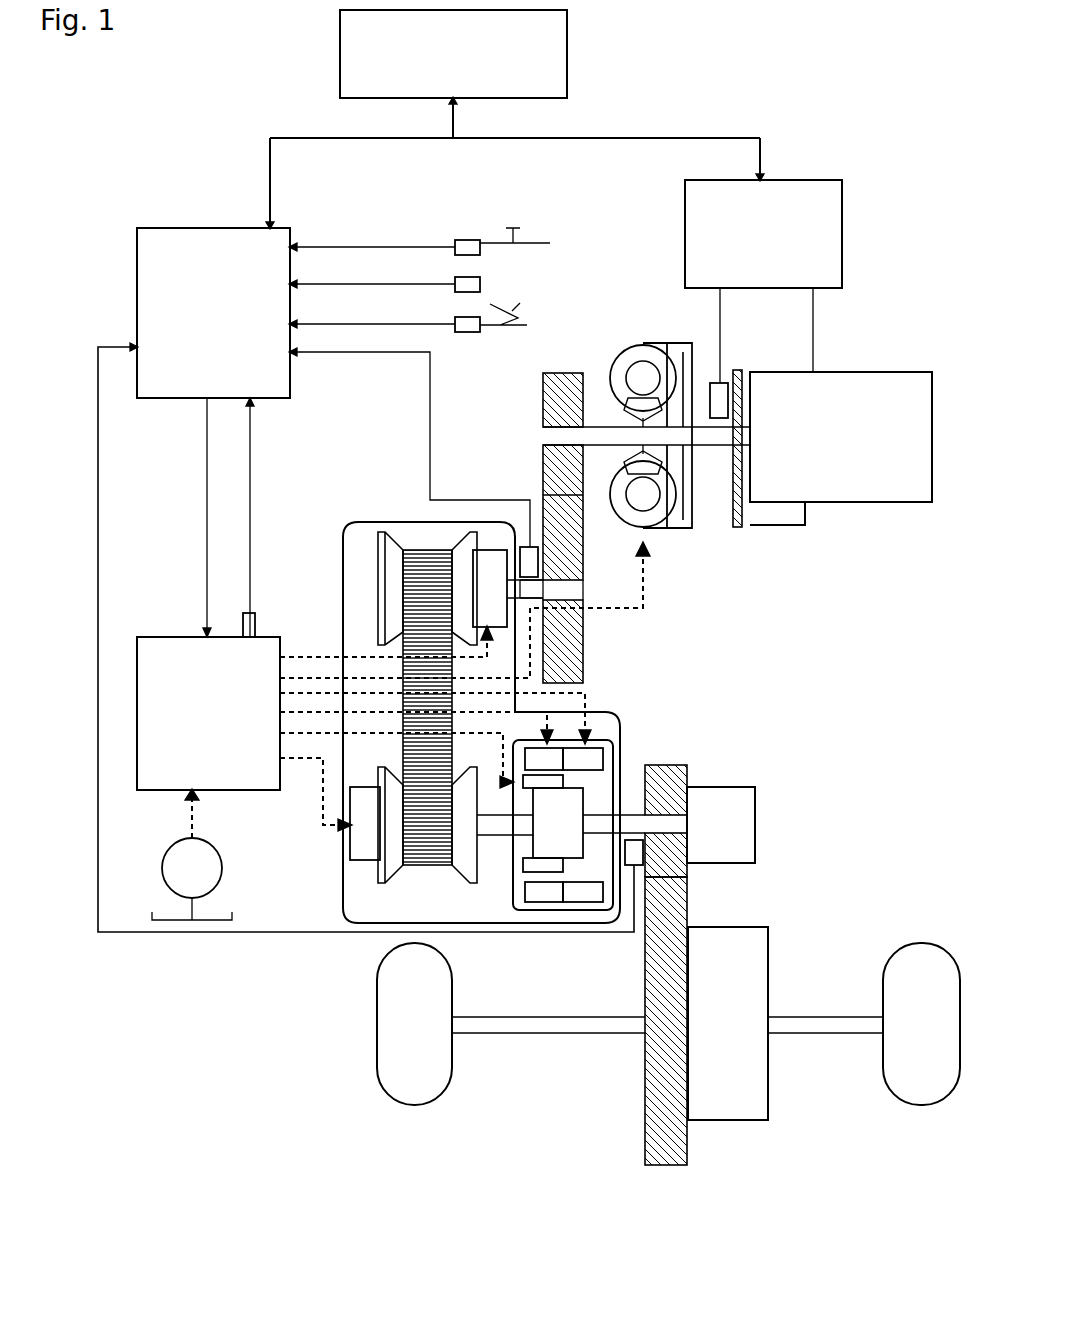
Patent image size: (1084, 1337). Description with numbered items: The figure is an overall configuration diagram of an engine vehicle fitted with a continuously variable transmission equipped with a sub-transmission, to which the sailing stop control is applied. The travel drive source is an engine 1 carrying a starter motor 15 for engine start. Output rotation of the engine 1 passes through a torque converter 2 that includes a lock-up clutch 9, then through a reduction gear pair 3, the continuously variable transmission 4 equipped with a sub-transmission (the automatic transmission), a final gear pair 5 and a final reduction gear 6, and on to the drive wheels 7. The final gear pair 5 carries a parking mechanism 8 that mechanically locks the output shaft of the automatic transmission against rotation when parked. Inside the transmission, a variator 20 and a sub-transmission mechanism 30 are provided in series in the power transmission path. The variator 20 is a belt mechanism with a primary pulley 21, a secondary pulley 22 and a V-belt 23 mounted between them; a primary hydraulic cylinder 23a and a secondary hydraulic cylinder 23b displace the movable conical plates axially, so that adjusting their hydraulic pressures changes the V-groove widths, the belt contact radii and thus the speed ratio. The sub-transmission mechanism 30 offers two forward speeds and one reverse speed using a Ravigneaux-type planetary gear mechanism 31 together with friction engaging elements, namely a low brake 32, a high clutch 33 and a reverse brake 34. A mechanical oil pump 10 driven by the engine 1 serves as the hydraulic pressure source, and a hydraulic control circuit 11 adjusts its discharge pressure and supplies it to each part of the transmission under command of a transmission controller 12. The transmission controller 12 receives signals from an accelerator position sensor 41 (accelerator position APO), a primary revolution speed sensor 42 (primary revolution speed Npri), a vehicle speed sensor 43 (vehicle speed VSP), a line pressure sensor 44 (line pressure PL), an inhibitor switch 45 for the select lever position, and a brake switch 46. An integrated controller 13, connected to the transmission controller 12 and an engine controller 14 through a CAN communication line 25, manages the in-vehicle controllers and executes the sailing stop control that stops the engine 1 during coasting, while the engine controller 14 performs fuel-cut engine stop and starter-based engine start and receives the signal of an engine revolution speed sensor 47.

The engine 1 is at (915, 398).
The torque converter 2 is at (665, 430).
The reduction gear pair 3 is at (566, 373).
The continuously variable transmission 4 is at (380, 536).
The final gear pair 5 is at (666, 1166).
The final reduction gear 6 is at (740, 1120).
The drive wheels 7 is at (414, 1100).
The parking mechanism 8 is at (745, 797).
The lock-up clutch 9 is at (692, 478).
The mechanical oil pump 10 is at (222, 840).
The hydraulic control circuit 11 is at (160, 650).
The transmission controller 12 is at (218, 250).
The integrated controller 13 is at (567, 30).
The engine controller 14 is at (820, 182).
The starter motor 15 is at (770, 527).
The variator 20 is at (343, 540).
The primary pulley 21 is at (385, 582).
The secondary pulley 22 is at (380, 875).
The V-belt 23 is at (422, 550).
The primary hydraulic cylinder 23a is at (488, 550).
The secondary hydraulic cylinder 23b is at (352, 845).
The CAN communication line 25 is at (580, 138).
The sub-transmission mechanism 30 is at (578, 798).
The Ravigneaux-type planetary gear mechanism 31 is at (687, 870).
The low brake 32 is at (553, 745).
The high clutch 33 is at (530, 878).
The reverse brake 34 is at (565, 740).
The accelerator position sensor 41 is at (466, 332).
The primary revolution speed sensor 42 is at (528, 545).
The vehicle speed sensor 43 is at (643, 855).
The line pressure sensor 44 is at (255, 622).
The inhibitor switch 45 is at (462, 240).
The brake switch 46 is at (480, 284).
The engine revolution speed sensor 47 is at (712, 383).